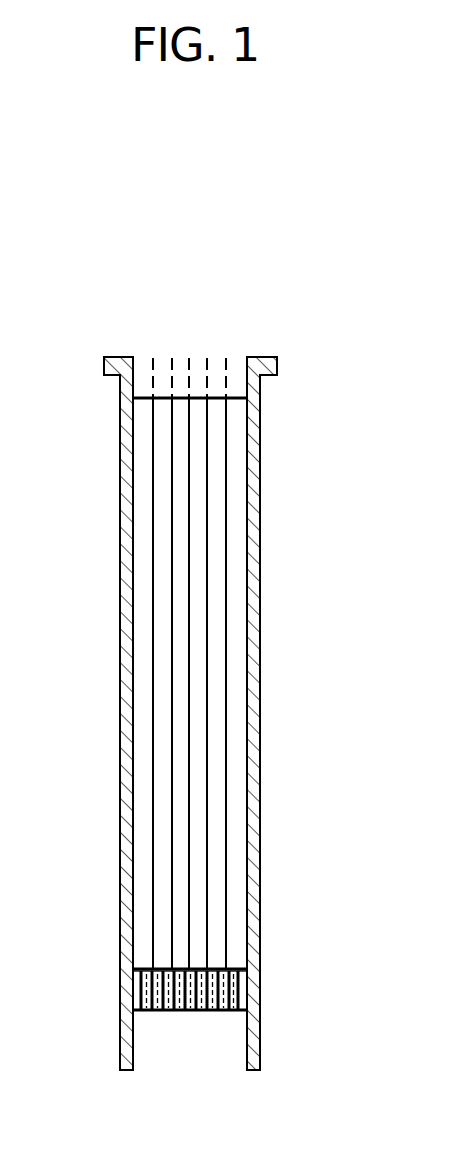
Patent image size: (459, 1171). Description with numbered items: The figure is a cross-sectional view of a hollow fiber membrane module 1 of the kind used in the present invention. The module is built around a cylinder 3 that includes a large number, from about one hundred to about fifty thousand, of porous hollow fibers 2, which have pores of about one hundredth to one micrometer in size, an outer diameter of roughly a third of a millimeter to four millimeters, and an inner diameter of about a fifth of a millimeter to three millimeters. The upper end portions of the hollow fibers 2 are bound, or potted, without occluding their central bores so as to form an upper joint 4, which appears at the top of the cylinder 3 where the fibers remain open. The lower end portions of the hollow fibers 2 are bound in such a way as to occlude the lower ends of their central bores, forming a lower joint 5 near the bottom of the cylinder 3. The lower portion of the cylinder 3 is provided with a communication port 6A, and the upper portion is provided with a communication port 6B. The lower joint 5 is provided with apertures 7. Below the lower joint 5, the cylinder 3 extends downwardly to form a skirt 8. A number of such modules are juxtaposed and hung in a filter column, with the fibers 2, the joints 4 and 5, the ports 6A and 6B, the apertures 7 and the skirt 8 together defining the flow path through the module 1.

The hollow fiber membrane module 1 is at (260, 700).
The porous hollow fibers 2 is at (228, 516).
The cylinder 3 is at (260, 828).
The upper joint 4 is at (200, 366).
The lower joint 5 is at (250, 992).
The communication port 6A is at (255, 968).
The communication port 6B is at (262, 405).
The apertures 7 is at (196, 1014).
The skirt 8 is at (120, 1048).